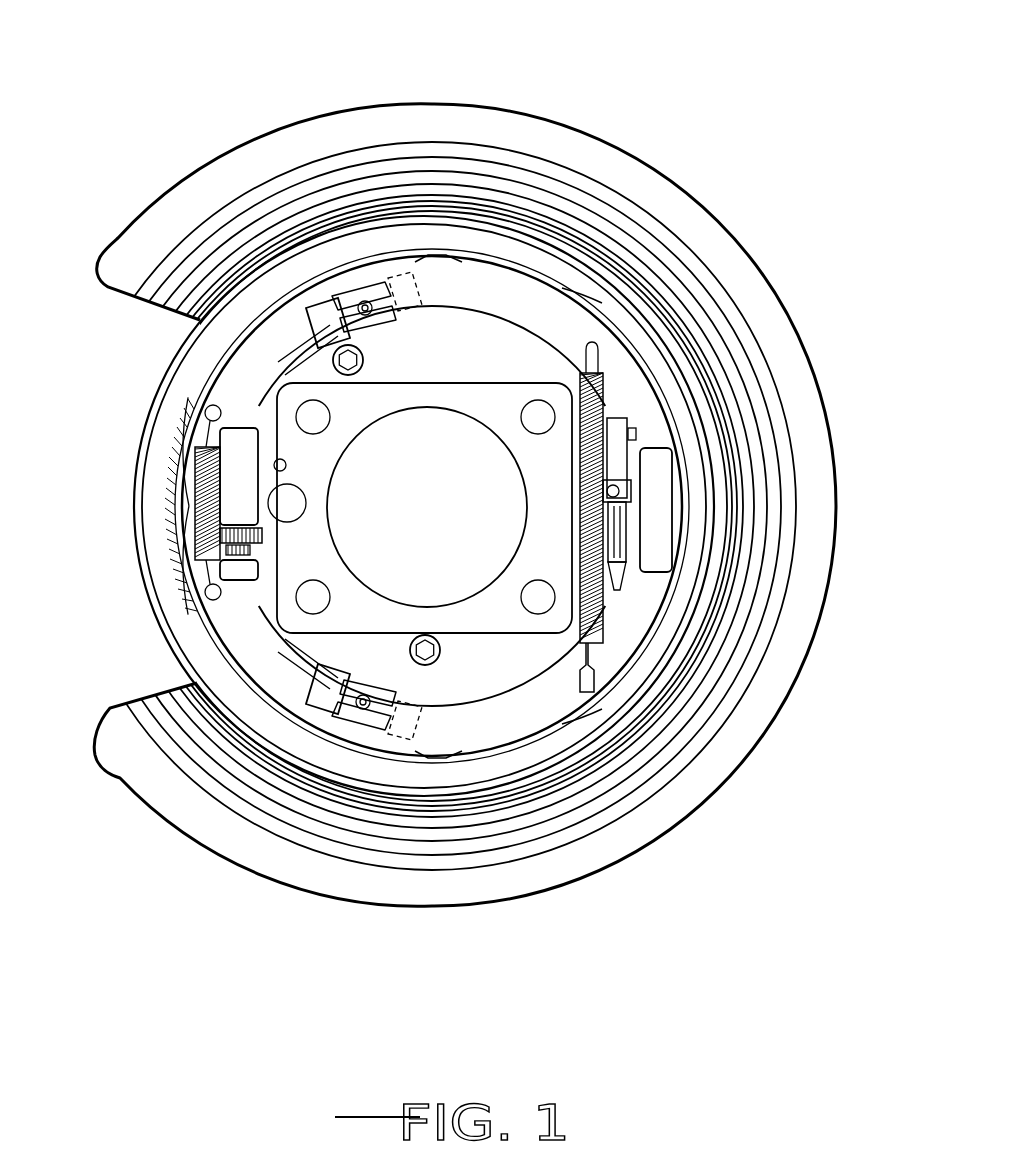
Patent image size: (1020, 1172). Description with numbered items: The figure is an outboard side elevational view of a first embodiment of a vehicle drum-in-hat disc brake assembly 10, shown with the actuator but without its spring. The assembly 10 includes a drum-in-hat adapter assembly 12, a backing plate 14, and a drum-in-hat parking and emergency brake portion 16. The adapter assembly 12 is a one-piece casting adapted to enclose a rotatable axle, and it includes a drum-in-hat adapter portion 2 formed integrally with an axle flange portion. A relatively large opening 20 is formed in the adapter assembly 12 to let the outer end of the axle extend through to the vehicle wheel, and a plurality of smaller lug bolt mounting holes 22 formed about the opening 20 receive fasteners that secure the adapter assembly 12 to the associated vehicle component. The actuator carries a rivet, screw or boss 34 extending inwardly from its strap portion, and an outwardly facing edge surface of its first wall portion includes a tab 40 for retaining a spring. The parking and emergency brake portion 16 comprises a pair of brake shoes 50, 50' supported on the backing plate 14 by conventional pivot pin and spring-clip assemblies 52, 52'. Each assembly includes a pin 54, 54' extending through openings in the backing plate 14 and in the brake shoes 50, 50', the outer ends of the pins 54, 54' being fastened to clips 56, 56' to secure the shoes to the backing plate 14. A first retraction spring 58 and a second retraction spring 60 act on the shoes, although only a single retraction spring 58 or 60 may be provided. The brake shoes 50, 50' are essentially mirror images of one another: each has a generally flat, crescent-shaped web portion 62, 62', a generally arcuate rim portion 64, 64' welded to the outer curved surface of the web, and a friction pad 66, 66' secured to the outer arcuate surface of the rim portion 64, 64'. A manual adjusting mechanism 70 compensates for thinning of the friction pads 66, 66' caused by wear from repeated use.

The vehicle drum-in-hat disc brake assembly 10 is at (174, 148).
The drum-in-hat adapter assembly 12 is at (487, 350).
The backing plate 14 is at (613, 162).
The drum-in-hat parking and emergency brake portion 16 is at (618, 400).
The opening 20 is at (518, 455).
The lug bolt mounting holes 22 is at (305, 590).
The boss 34 is at (622, 492).
The tab 40 is at (640, 536).
The brake shoe 50 is at (675, 235).
The brake shoe 50' is at (687, 745).
The pivot pin and spring-clip assembly 52 is at (274, 208).
The pivot pin and spring-clip assembly 52' is at (244, 778).
The pin 54 is at (306, 184).
The pin 54' is at (344, 835).
The clip 56 is at (345, 179).
The clip 56' is at (324, 806).
The first retraction spring 58 is at (604, 641).
The second retraction spring 60 is at (200, 500).
The web portion 62 is at (432, 261).
The web portion 62' is at (432, 704).
The rim portion 64 is at (380, 163).
The rim portion 64' is at (467, 829).
The friction pad 66 is at (469, 309).
The friction pad 66' is at (463, 626).
The manual adjusting mechanism 70 is at (230, 462).
The drum-in-hat adapter portion 2 is at (448, 74).